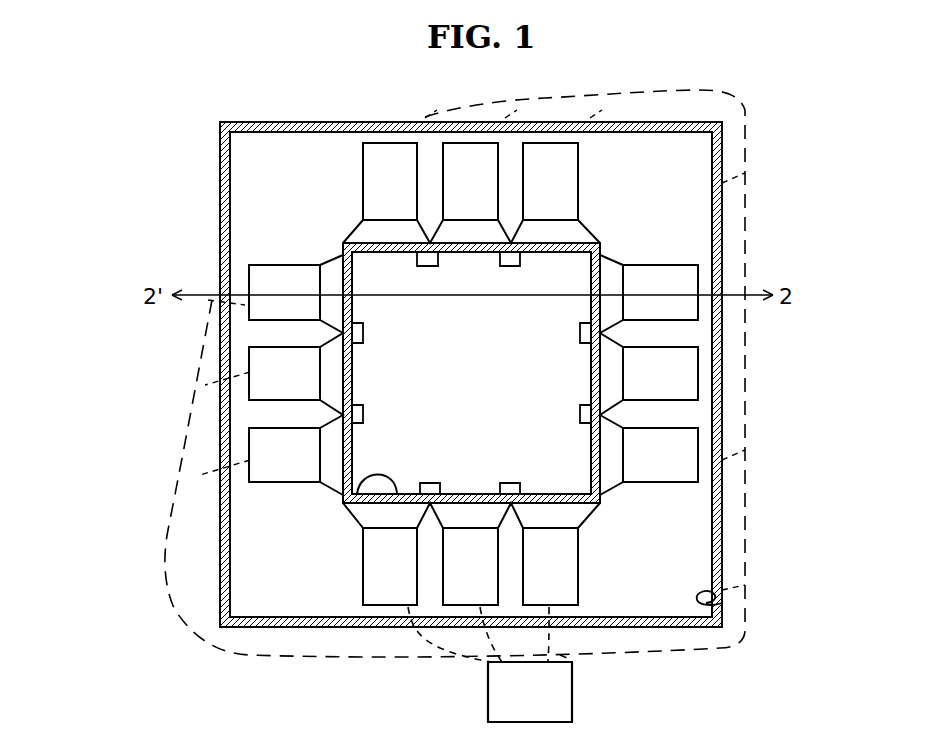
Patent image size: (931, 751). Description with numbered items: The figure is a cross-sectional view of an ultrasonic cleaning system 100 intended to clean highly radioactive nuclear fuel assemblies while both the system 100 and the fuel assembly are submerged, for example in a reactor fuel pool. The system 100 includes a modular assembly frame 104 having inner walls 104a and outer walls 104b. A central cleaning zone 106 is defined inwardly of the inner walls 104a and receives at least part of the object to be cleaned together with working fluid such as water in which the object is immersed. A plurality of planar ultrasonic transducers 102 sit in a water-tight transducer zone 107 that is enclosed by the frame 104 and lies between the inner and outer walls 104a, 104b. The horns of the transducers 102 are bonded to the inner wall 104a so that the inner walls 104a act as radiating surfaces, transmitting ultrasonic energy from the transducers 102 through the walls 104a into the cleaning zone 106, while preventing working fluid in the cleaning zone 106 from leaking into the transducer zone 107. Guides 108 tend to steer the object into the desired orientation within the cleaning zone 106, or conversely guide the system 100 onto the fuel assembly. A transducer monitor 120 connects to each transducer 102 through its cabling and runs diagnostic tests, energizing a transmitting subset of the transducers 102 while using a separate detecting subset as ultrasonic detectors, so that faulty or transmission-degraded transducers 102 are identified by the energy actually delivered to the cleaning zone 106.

The ultrasonic cleaning system 100 is at (116, 108).
The planar ultrasonic transducers 102 is at (700, 456).
The modular assembly frame 104 is at (722, 180).
The inner walls 104a is at (350, 505).
The outer walls 104b is at (722, 603).
The central cleaning zone 106 is at (540, 455).
The transducer zone 107 is at (656, 209).
The guides 108 is at (604, 265).
The transducer monitor 120 is at (490, 664).